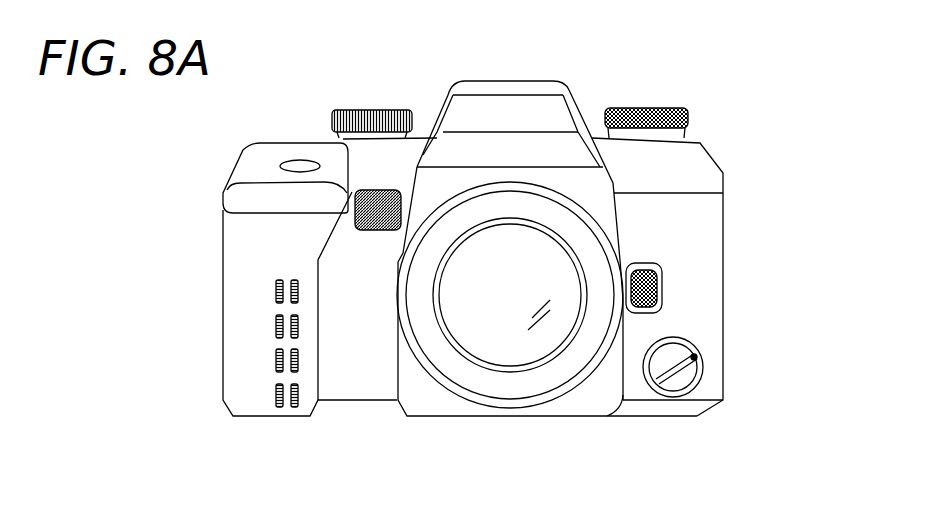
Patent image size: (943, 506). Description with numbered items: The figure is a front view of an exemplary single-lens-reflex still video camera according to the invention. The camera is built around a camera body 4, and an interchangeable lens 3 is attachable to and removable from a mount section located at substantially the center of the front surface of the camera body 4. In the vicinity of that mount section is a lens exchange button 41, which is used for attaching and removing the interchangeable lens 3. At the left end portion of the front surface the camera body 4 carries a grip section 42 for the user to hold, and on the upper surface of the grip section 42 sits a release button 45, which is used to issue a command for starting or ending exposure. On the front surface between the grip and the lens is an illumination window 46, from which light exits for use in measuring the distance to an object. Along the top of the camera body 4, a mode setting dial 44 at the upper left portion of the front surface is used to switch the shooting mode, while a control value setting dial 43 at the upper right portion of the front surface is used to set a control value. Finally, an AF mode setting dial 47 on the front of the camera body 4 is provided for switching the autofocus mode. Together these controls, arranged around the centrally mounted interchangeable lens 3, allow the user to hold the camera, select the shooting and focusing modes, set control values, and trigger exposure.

The interchangeable lens 3 is at (533, 357).
The camera body 4 is at (712, 303).
The lens exchange button 41 is at (650, 267).
The grip section 42 is at (233, 252).
The control value setting dial 43 is at (656, 108).
The mode setting dial 44 is at (365, 108).
The release button 45 is at (297, 160).
The illumination window 46 is at (379, 226).
The AF mode setting dial 47 is at (700, 373).